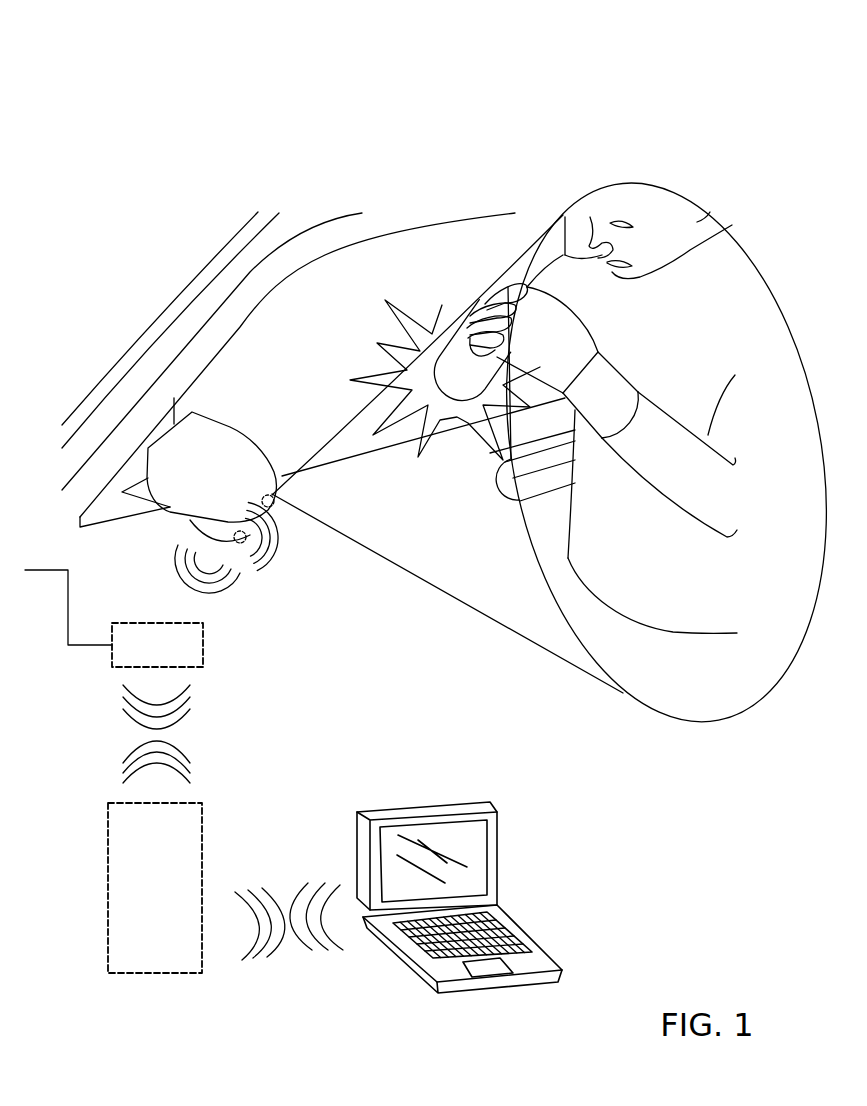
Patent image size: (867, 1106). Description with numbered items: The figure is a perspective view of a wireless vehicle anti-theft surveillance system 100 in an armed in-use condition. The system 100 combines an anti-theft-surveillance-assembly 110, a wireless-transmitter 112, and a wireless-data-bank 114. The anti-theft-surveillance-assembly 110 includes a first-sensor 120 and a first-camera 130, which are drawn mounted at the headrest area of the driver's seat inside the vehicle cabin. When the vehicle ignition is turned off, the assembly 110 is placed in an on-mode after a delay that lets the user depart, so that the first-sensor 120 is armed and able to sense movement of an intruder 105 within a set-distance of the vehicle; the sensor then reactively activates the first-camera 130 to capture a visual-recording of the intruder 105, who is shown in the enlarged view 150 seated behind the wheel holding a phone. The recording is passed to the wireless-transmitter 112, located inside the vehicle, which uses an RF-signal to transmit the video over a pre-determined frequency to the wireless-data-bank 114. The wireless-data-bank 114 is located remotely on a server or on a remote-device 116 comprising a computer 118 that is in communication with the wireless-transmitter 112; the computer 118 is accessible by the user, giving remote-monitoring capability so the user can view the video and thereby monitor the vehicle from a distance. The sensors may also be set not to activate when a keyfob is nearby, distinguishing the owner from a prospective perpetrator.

The wireless vehicle anti-theft surveillance system 100 is at (632, 78).
The enlarged view of driver 150 is at (636, 140).
The intruder 105 is at (650, 385).
The first-camera 130 is at (290, 486).
The first-sensor 120 is at (252, 537).
The wireless-transmitter 112 is at (145, 655).
The wireless-data-bank 114 is at (144, 898).
The anti-theft-surveillance-assembly 110 is at (264, 653).
The computer 118 is at (495, 793).
The remote-device 116 is at (524, 920).